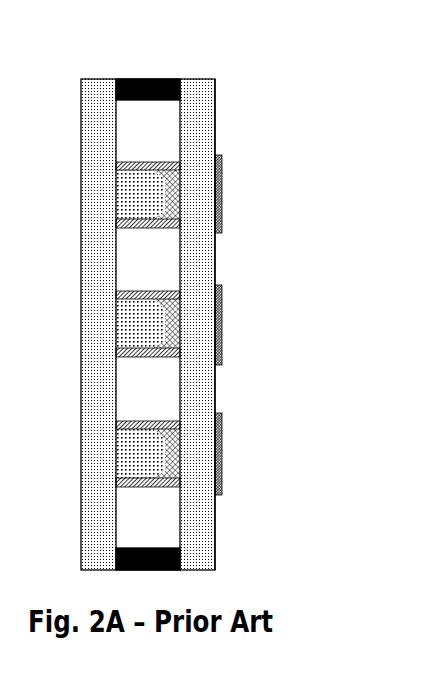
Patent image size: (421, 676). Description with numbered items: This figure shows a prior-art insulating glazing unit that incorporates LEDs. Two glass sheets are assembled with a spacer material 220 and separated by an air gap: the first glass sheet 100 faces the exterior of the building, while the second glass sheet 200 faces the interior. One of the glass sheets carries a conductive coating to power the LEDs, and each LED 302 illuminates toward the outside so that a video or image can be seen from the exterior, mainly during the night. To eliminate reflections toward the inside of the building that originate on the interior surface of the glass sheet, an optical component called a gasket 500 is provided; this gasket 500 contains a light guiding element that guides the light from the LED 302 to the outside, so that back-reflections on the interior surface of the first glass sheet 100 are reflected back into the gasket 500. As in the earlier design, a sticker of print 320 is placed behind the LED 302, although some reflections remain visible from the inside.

The first glass sheet 100 is at (104, 71).
The second glass sheet 200 is at (205, 73).
The spacer material 220 is at (155, 106).
The LED 302 is at (186, 189).
The gasket 500 is at (203, 225).
The sticker of print 320 is at (226, 368).